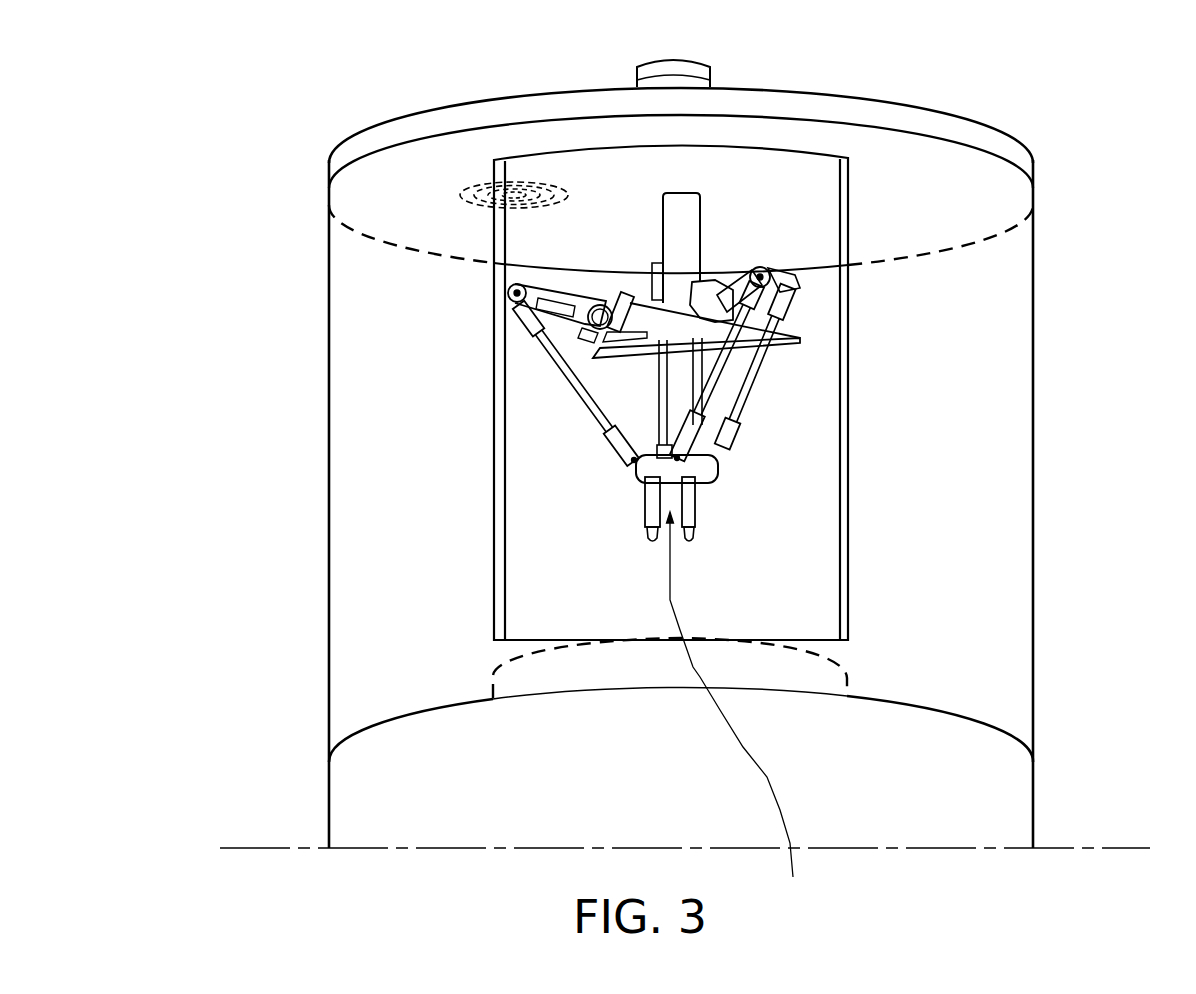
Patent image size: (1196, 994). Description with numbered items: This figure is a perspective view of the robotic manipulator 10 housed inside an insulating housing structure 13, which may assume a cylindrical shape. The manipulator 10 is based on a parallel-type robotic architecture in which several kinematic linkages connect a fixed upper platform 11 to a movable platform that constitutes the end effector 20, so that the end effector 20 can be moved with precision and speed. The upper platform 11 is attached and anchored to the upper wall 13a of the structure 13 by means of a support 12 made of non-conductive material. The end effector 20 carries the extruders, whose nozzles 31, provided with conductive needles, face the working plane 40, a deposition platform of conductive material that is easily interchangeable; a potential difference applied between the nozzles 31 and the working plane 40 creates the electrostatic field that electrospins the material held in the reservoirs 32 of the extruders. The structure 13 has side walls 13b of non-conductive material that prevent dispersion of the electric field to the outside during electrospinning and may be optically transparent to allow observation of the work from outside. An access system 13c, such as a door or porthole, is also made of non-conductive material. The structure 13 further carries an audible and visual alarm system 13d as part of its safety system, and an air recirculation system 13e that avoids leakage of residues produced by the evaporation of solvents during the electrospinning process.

The robotic manipulator 10 is at (797, 362).
The fixed upper platform 11 is at (638, 293).
The support 12 is at (700, 228).
The structure 13 is at (320, 294).
The upper wall 13a is at (800, 193).
The side walls 13b is at (995, 422).
The access system 13c is at (540, 507).
The audible and visual alarm system 13d is at (635, 62).
The air recirculation system 13e is at (535, 194).
The end effector 20 is at (737, 708).
The nozzles 31 is at (690, 537).
The reservoirs 32 is at (690, 513).
The working plane 40 is at (857, 672).